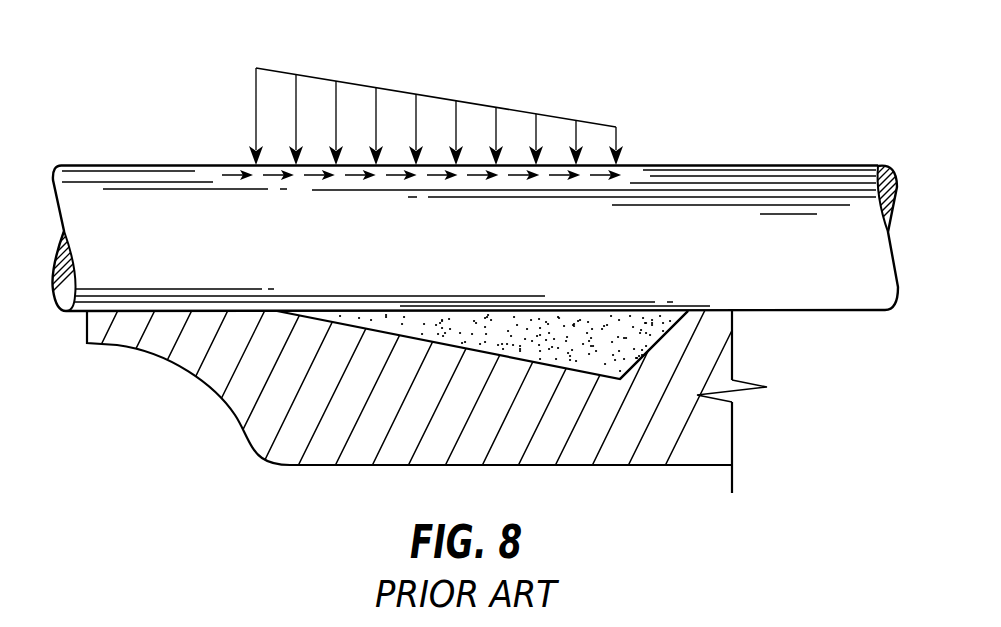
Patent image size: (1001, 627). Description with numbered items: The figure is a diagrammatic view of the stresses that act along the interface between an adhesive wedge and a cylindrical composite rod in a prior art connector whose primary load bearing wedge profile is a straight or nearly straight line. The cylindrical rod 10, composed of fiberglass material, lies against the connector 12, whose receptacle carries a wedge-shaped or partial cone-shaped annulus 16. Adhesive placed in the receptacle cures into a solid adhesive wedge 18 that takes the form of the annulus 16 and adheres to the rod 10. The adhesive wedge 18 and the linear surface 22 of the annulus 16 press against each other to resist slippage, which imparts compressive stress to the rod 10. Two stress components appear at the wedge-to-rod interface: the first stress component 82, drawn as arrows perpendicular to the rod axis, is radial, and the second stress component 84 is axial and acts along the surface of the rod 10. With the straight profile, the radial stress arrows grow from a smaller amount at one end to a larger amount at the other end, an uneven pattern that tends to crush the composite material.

The cylindrical rod 10 is at (820, 172).
The connector 12 is at (320, 465).
The annulus 16 is at (558, 368).
The adhesive wedge 18 is at (640, 329).
The linear surface 22 is at (637, 365).
The first stress component 82 is at (440, 98).
The second stress component 84 is at (555, 177).